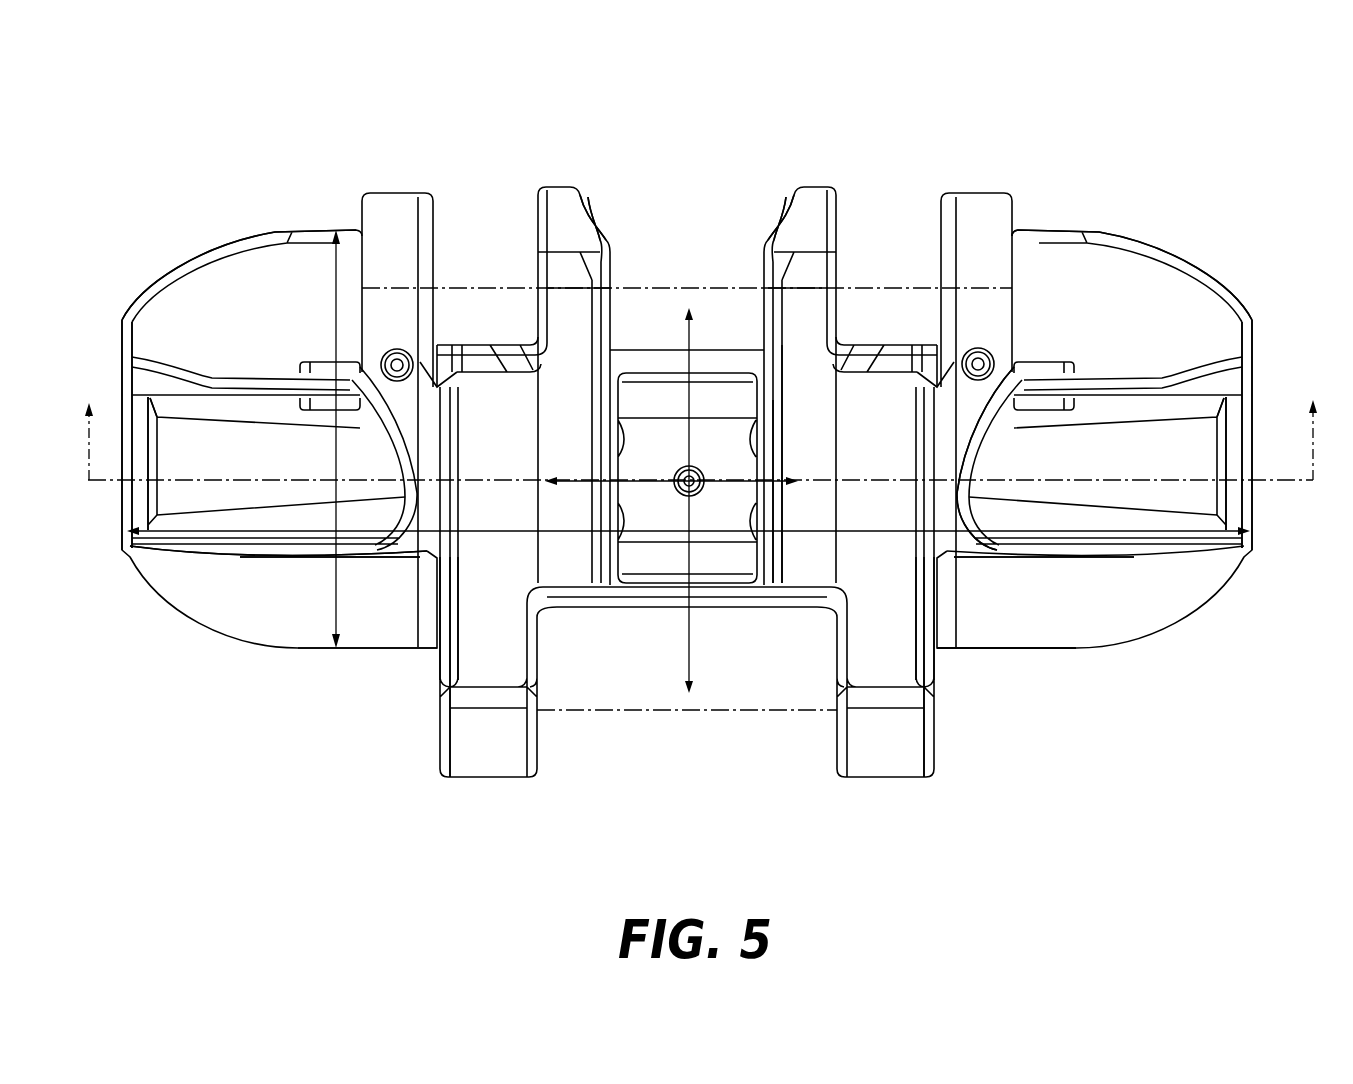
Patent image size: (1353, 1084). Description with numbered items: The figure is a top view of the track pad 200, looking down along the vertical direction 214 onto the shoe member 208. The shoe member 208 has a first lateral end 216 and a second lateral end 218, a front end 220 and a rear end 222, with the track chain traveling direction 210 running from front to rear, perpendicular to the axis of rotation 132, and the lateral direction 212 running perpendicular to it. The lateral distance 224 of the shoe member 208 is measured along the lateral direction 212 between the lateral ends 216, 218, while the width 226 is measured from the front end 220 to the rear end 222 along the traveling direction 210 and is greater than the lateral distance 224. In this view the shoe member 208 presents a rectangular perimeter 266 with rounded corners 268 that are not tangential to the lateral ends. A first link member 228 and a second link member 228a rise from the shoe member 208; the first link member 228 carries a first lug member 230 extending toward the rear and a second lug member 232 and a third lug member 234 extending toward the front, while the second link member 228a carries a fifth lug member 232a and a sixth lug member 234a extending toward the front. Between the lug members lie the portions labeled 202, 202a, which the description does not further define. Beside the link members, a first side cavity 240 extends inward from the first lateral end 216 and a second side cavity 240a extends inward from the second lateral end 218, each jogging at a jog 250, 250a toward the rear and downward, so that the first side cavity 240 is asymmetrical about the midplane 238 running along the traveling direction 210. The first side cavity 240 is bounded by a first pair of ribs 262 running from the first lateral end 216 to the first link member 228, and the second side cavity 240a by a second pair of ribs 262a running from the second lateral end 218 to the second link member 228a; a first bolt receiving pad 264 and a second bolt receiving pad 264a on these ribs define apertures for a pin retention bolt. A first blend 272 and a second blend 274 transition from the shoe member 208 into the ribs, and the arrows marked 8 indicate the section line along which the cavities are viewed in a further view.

The section line 8- 8 is at (701, 422).
The axis of rotation 132 is at (452, 287).
The track pad 200 is at (701, 457).
The first pin journal 202 is at (528, 558).
The second pin journal 202a is at (879, 560).
The shoe member 208 is at (1080, 650).
The track chain traveling direction 210 is at (692, 347).
The lateral direction 212 is at (607, 480).
The vertical direction 214 is at (695, 490).
The first lateral end 216 is at (120, 497).
The second lateral end 218 is at (1255, 530).
The front end 220 is at (318, 230).
The rear end 222 is at (375, 650).
The lateral distance 224 is at (1215, 527).
The width 226 is at (333, 583).
The first link member 228 is at (583, 267).
The second link member 228a is at (988, 193).
The first lug member 230 is at (480, 777).
The second lug member 232 is at (567, 187).
The fifth lug member 232a is at (813, 197).
The third lug member 234 is at (403, 193).
The sixth lug member 234a is at (967, 222).
The midplane 238 is at (867, 465).
The first side cavity 240 is at (222, 448).
The second side cavity 240a is at (1012, 458).
The jog 250 is at (355, 430).
The jog 250a is at (1008, 382).
The first pair of ribs 262 is at (253, 387).
The second pair of ribs 262a is at (1160, 378).
The first bolt receiving pad 264 is at (310, 410).
The second bolt receiving pad 264a is at (1045, 367).
The rectangular perimeter 266 is at (990, 650).
The rounded corners 268 is at (178, 607).
The first blend 272 is at (253, 614).
The second blend 274 is at (1152, 608).